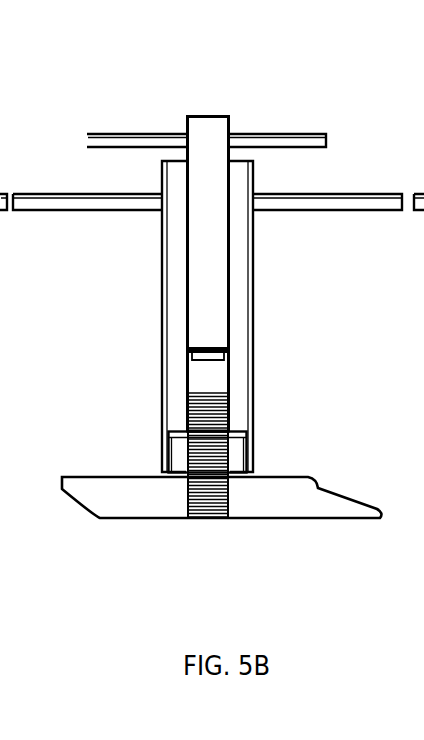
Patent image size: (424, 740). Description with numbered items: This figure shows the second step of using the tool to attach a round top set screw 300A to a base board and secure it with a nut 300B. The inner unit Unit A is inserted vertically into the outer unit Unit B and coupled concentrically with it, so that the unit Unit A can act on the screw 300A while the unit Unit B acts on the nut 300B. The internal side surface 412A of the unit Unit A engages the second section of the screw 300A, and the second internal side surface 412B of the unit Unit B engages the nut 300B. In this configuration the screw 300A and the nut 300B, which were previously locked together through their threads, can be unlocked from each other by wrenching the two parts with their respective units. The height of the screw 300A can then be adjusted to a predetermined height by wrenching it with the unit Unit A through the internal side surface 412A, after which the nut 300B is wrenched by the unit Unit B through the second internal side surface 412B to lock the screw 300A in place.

The unit A Unit A is at (200, 132).
The unit B Unit B is at (170, 187).
The internal side surface 412A is at (231, 375).
The round top set screw 300A is at (231, 408).
The second internal side surface 412B is at (168, 450).
The nut 300B is at (235, 453).